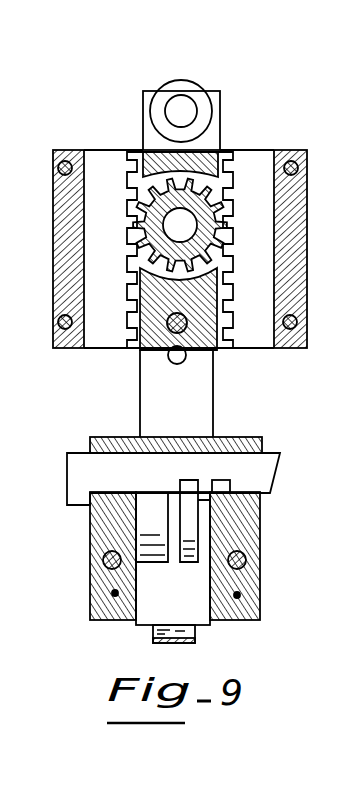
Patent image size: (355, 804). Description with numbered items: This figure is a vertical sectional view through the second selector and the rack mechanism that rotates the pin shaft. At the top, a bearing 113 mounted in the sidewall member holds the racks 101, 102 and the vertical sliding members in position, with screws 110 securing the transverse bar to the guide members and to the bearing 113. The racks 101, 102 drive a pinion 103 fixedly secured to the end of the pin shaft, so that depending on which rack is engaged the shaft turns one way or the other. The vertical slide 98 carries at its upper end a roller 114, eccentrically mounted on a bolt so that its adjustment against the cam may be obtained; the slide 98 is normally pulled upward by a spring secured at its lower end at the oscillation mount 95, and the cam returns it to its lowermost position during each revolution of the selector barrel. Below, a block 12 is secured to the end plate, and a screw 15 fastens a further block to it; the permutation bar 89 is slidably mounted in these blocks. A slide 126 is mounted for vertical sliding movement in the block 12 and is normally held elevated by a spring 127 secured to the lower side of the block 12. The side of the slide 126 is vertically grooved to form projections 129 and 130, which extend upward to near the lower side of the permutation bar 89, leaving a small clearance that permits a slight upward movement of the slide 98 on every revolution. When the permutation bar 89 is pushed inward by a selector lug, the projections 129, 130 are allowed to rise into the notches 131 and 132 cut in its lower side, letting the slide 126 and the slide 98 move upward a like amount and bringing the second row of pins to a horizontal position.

The block 12 is at (262, 599).
The screw 15 is at (90, 562).
The permutation bar 89 is at (272, 467).
The oscillation mount 95 is at (186, 357).
The vertical slide 98 is at (207, 141).
The rack 101 is at (104, 139).
The rack 102 is at (265, 150).
The pinion 103 is at (135, 231).
The screws 110 is at (53, 166).
The bearing 113 is at (53, 257).
The roller 114 is at (185, 81).
The slide 126 is at (238, 421).
The spring 127 is at (197, 643).
The projection 129 is at (210, 520).
The projection 130 is at (173, 519).
The notch 131 is at (218, 486).
The notch 132 is at (187, 485).